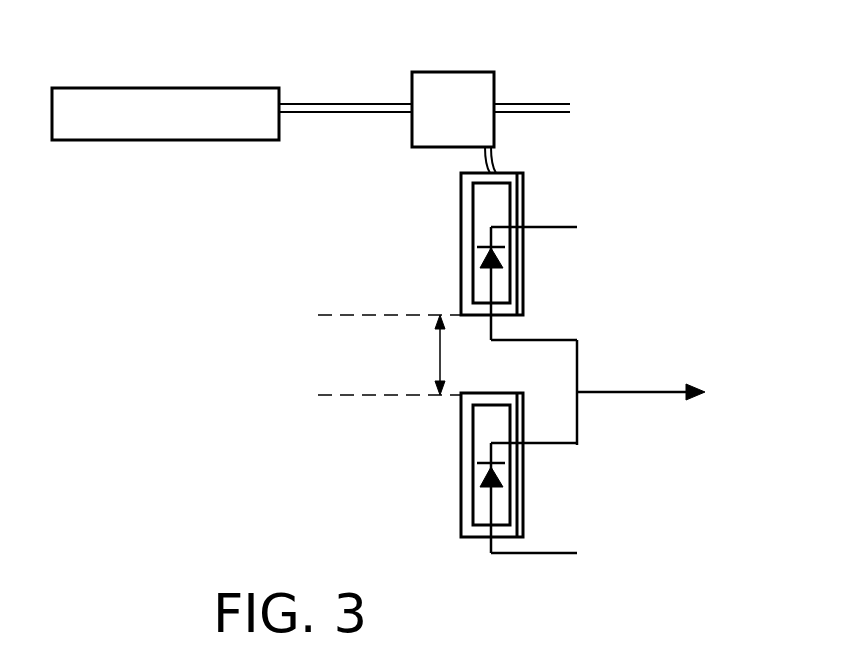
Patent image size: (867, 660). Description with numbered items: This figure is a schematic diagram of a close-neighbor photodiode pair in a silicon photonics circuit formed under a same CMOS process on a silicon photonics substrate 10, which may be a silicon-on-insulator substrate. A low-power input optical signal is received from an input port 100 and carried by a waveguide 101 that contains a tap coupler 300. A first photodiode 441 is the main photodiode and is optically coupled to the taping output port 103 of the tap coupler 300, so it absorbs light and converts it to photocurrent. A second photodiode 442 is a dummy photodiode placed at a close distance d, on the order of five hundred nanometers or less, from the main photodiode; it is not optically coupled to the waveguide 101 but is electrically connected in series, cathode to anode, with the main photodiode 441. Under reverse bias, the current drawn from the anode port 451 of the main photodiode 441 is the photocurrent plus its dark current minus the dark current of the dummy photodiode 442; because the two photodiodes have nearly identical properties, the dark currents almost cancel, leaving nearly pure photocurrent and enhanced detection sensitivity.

The silicon photonics substrate 10 is at (226, 294).
The input port 100 is at (165, 97).
The waveguide 101 is at (328, 102).
The tap coupler 300 is at (428, 72).
The taping output port 103 is at (483, 165).
The first photodiode PD1 441 is at (468, 298).
The second photodiode PD2 442 is at (470, 517).
The anode port 451 is at (637, 395).